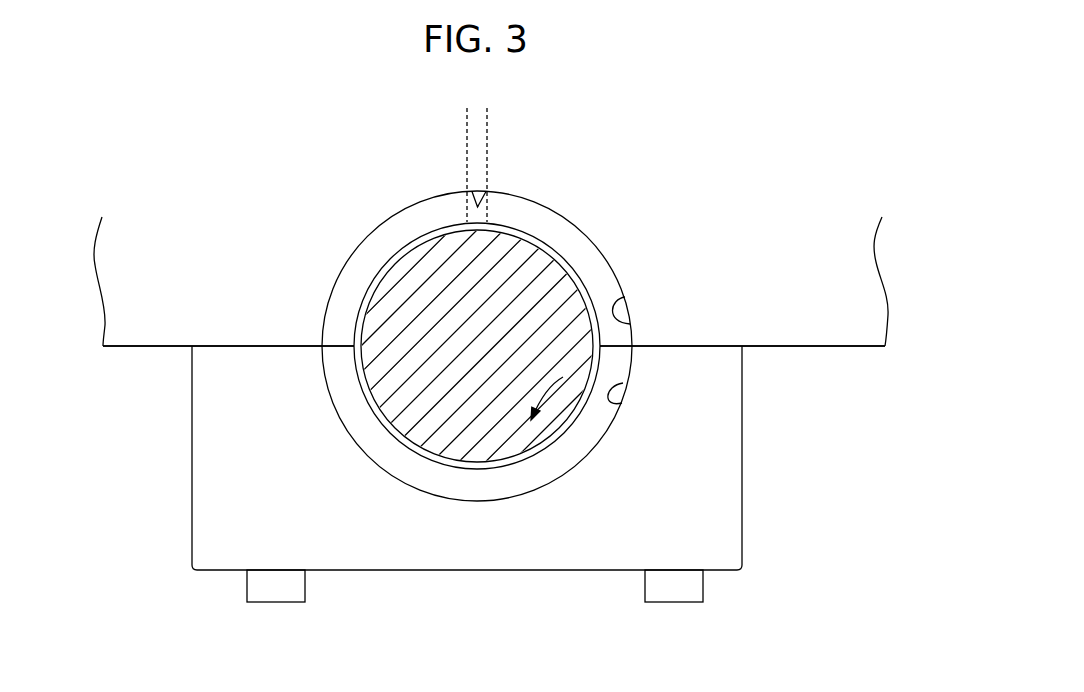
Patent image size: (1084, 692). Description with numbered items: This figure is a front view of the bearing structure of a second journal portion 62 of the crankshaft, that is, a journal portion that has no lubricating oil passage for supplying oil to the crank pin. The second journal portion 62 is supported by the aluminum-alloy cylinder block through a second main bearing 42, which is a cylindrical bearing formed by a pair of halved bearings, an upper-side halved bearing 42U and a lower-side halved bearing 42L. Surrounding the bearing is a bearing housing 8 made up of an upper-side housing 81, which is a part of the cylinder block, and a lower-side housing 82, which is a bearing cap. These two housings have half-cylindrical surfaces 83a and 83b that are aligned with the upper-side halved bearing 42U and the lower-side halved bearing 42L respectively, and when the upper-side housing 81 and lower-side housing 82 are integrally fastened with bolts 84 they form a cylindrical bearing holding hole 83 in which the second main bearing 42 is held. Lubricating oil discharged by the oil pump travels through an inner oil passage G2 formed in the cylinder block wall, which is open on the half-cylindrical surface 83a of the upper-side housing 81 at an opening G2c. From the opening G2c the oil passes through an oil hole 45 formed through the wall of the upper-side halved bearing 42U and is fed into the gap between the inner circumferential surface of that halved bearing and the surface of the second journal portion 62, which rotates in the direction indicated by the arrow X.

The bearing housing 8 is at (856, 390).
The upper-side housing 81 is at (795, 334).
The lower-side housing 82 is at (744, 505).
The bolts 84 is at (274, 587).
The second main bearing 42 is at (441, 336).
The upper-side halved bearing 42U is at (338, 275).
The lower-side halved bearing 42L is at (323, 373).
The second journal portion 62 is at (418, 419).
The oil hole 45 is at (488, 204).
The inner oil passage G2 is at (472, 127).
The opening G2c is at (486, 192).
The bearing holding hole 83 is at (689, 353).
The half-cylindrical surface 83a is at (632, 325).
The half-cylindrical surface 83b is at (622, 403).
The rotation direction X is at (542, 408).